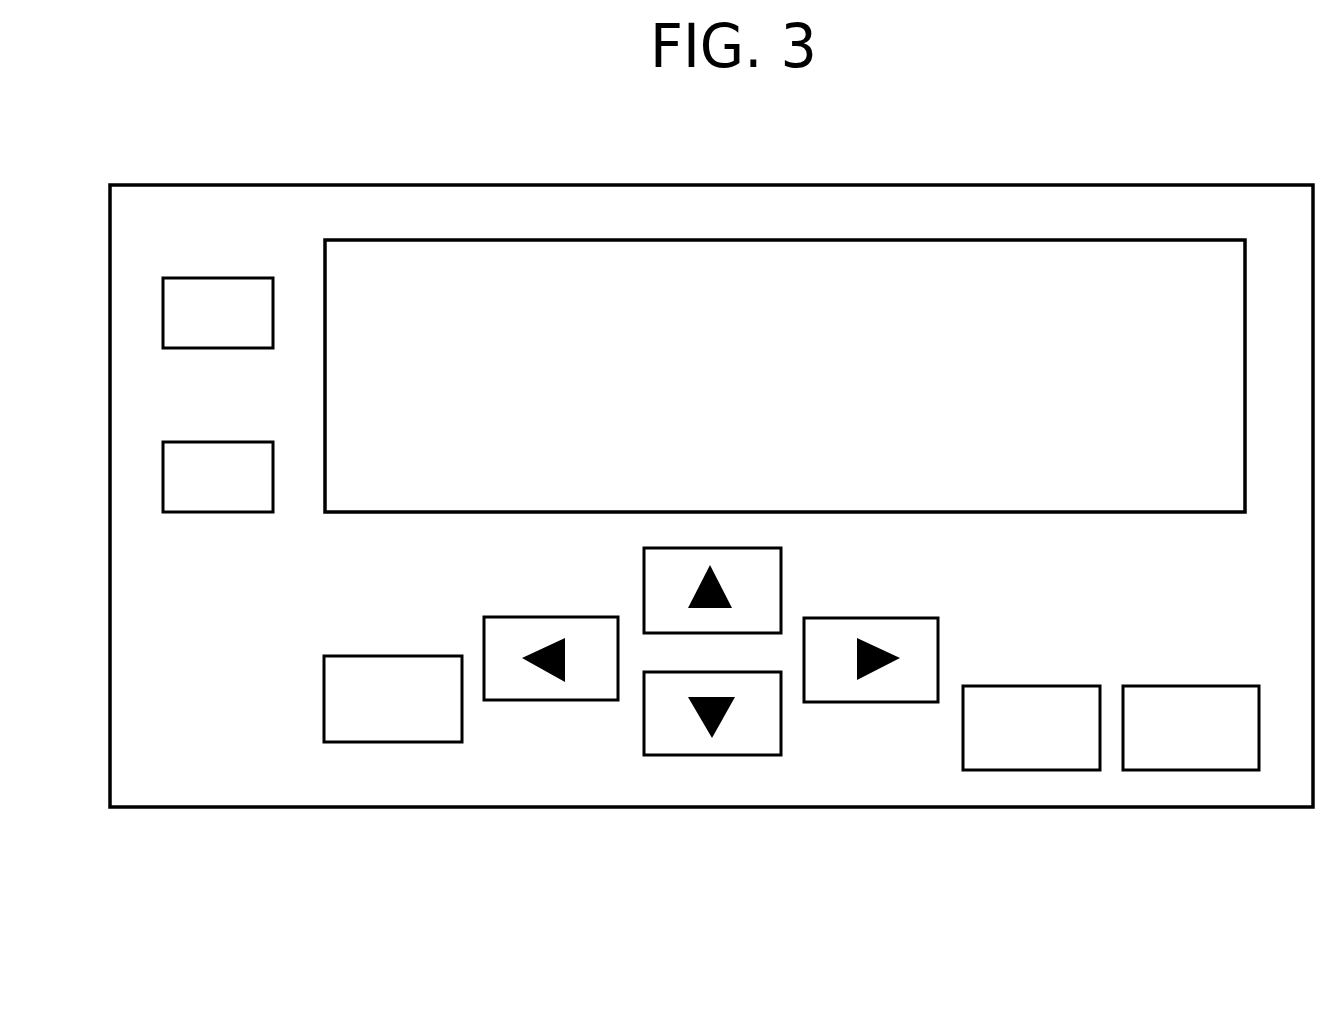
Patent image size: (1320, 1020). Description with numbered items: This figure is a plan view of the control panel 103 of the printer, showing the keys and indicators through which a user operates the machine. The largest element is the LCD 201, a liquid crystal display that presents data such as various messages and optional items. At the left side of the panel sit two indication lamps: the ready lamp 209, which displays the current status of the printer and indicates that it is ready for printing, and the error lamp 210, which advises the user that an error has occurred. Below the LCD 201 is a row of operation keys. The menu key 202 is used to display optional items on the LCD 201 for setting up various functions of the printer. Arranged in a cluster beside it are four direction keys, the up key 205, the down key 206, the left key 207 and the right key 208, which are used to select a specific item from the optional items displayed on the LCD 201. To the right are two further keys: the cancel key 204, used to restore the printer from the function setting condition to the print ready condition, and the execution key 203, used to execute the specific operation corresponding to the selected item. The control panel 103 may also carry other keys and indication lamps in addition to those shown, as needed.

The control panel 103 is at (940, 186).
The LCD 201 is at (1068, 512).
The menu key 202 is at (400, 657).
The execution key 203 is at (1143, 686).
The cancel key 204 is at (980, 686).
The up key 205 is at (781, 608).
The down key 206 is at (783, 722).
The left key 207 is at (595, 701).
The right key 208 is at (938, 638).
The ready lamp 209 is at (256, 349).
The error lamp 210 is at (245, 513).